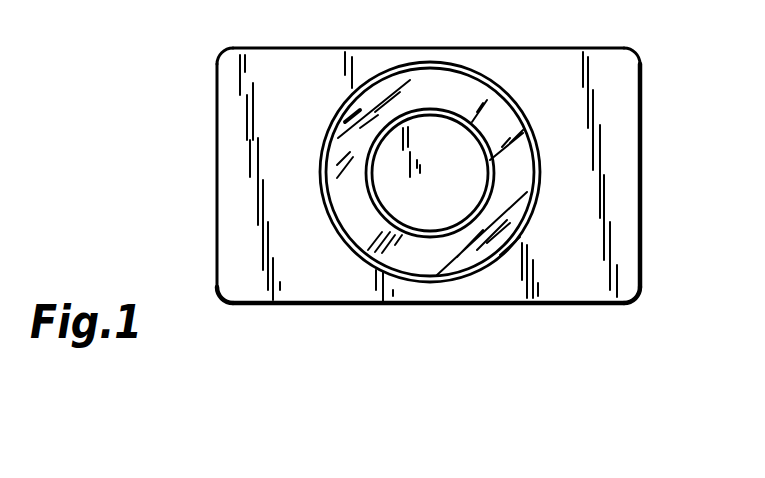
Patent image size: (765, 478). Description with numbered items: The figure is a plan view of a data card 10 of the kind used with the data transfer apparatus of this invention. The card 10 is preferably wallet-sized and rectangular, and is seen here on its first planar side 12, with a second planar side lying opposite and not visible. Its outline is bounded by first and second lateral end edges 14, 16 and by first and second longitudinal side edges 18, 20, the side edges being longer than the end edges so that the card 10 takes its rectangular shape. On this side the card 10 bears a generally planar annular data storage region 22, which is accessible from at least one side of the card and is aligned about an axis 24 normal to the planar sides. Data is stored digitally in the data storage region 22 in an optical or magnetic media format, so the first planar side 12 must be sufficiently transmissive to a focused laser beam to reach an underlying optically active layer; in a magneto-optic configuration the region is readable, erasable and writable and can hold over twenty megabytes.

The data card 10 is at (655, 175).
The first planar side 12 is at (632, 98).
The first lateral end edge 14 is at (640, 223).
The second lateral end edge 16 is at (217, 187).
The first longitudinal side edge 18 is at (408, 305).
The second longitudinal side edge 20 is at (316, 47).
The annular data storage region 22 is at (432, 85).
The axis 24 is at (427, 172).